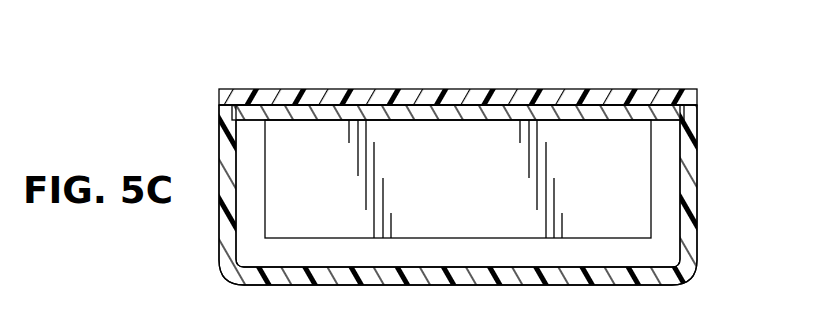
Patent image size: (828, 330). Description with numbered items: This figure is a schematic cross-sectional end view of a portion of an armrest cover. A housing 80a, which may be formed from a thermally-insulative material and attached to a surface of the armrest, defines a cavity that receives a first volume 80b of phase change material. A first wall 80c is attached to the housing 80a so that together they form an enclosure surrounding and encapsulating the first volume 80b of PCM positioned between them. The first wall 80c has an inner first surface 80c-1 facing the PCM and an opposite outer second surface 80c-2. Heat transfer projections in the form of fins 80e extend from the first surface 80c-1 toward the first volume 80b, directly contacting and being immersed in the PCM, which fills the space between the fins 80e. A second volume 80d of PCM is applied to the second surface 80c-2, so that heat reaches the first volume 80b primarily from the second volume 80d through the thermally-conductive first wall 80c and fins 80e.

The housing 80a is at (687, 193).
The first volume of PCM 80b is at (668, 175).
The first wall 80c is at (593, 112).
The first surface 80c-1 is at (613, 122).
The second surface 80c-2 is at (480, 103).
The second volume of PCM 80d is at (287, 97).
The fins 80e is at (468, 184).